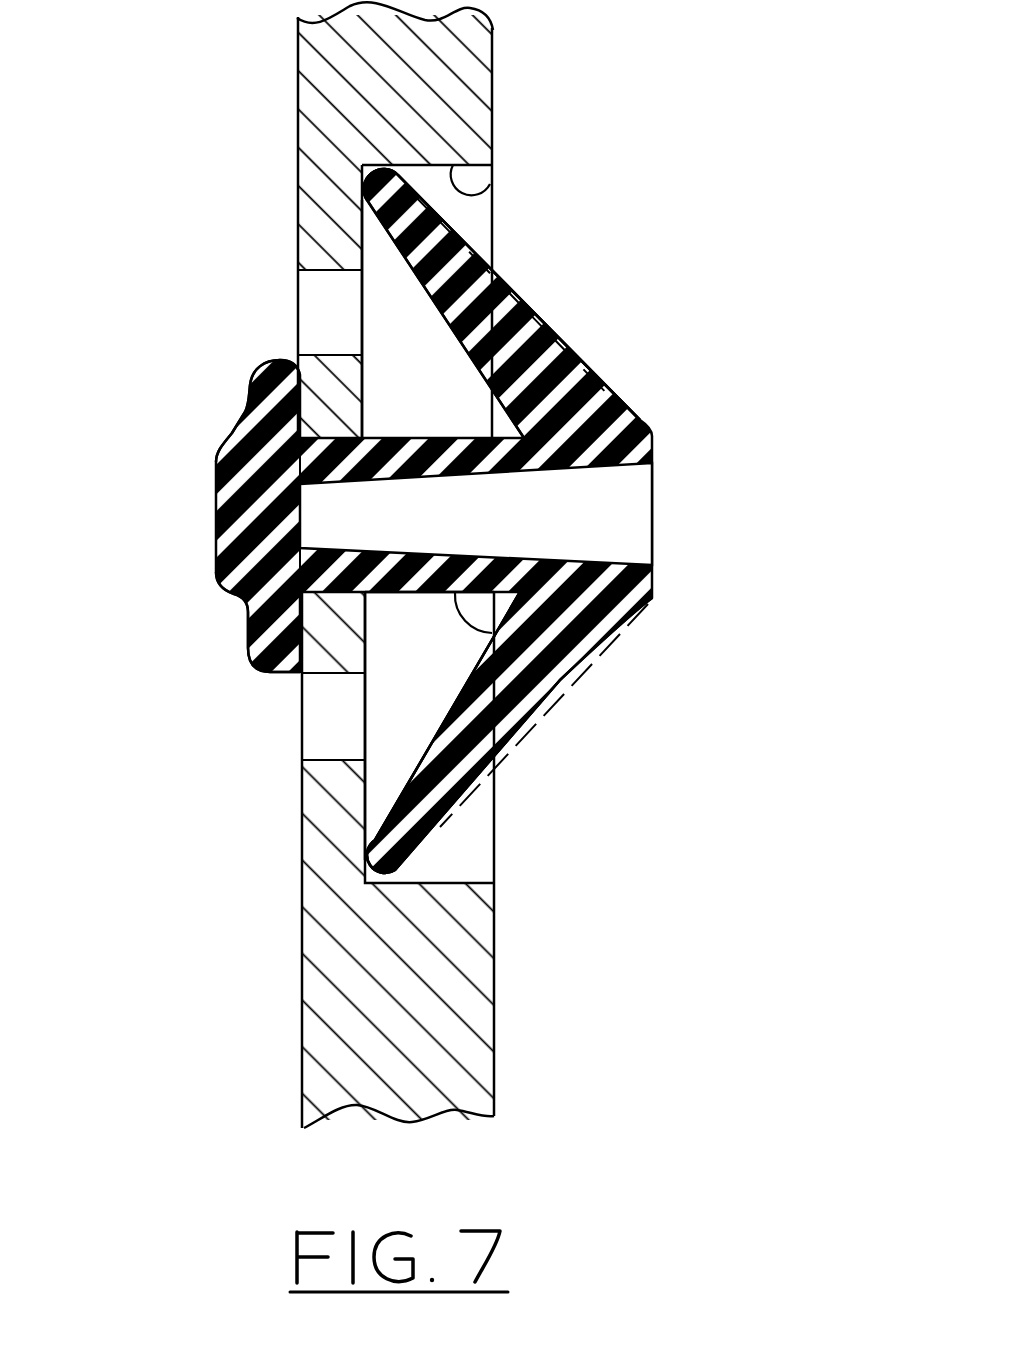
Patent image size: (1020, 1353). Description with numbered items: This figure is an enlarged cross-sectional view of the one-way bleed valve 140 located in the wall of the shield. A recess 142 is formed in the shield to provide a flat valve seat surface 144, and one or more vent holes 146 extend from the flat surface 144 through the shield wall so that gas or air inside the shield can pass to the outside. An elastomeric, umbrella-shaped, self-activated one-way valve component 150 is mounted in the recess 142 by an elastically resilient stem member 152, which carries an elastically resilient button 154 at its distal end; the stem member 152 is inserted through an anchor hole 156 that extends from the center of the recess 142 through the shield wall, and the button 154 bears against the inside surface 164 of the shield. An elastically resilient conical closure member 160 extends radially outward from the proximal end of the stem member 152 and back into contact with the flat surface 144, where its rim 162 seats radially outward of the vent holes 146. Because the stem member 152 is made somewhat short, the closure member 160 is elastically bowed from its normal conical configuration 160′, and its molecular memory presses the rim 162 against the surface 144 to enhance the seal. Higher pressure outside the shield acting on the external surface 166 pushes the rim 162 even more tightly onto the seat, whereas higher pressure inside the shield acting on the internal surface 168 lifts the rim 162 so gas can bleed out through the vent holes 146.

The one-way bleed valve 140 is at (603, 185).
The recess 142 is at (489, 186).
The flat valve seat surface 144 is at (363, 245).
The vent holes 146 is at (317, 273).
The one-way valve component 150 is at (648, 418).
The stem member 152 is at (558, 667).
The button 154 is at (250, 413).
The anchor hole 156 is at (247, 605).
The conical closure member 160 is at (450, 238).
The normal conical configuration 160′ is at (516, 298).
The rim 162 is at (362, 192).
The inside surface 164 is at (278, 372).
The external surface 166 is at (535, 328).
The internal surface 168 is at (373, 225).